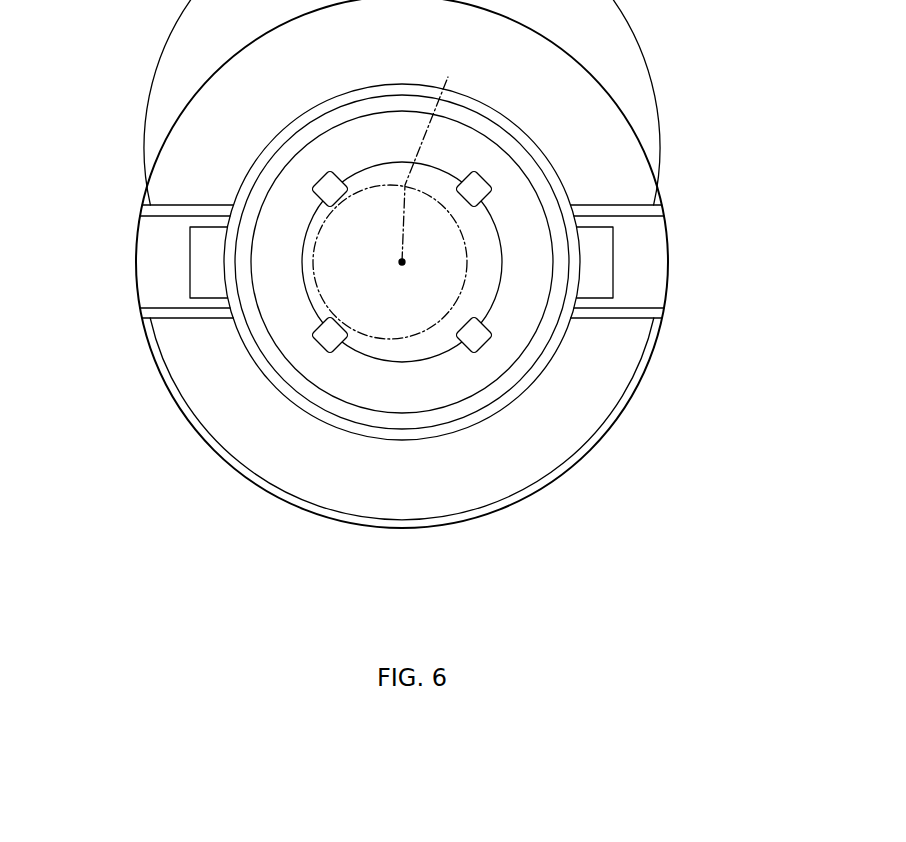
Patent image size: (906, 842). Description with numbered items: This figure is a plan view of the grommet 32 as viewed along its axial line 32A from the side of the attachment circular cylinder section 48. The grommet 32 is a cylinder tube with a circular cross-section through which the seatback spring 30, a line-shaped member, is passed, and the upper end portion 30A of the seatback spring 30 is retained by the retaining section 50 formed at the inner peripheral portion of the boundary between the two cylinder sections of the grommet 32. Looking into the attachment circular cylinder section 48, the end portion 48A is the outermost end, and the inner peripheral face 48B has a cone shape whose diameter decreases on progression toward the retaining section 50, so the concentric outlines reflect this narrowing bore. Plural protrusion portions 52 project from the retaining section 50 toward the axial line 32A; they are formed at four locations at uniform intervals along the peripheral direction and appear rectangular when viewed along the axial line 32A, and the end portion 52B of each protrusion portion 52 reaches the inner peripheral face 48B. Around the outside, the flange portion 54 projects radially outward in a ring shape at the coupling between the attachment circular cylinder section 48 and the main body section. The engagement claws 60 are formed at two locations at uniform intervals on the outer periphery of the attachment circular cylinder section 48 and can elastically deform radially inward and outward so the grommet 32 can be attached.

The seatback spring 30 is at (453, 348).
The upper end portion of the seatback spring 30A is at (424, 342).
The grommet 32 is at (630, 78).
The axial line of the grommet 32A is at (438, 154).
The attachment circular cylinder section 48 is at (475, 275).
The end portion of the attachment circular cylinder section 48A is at (513, 337).
The inner peripheral face of the attachment circular cylinder section 48B is at (557, 338).
The retaining section 50 is at (387, 171).
The protrusion portions 52 is at (417, 273).
The another end portion of the protrusion portion 52B is at (327, 190).
The flange portion 54 is at (647, 149).
The engagement claws 60 is at (187, 264).